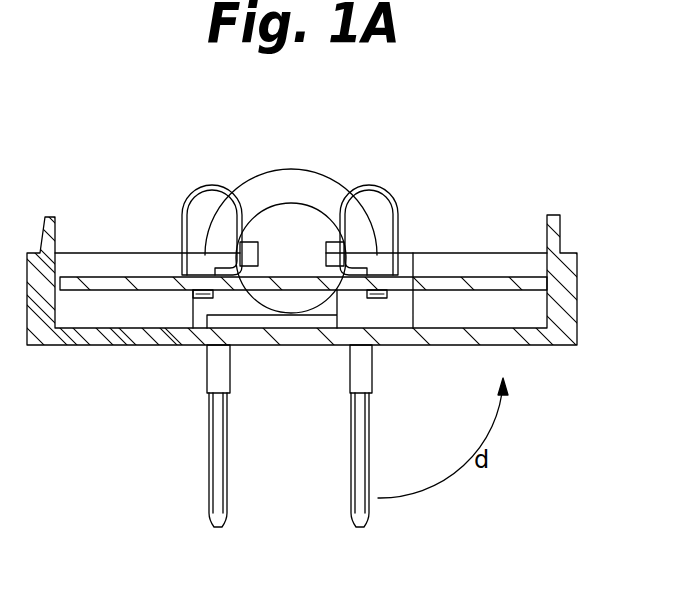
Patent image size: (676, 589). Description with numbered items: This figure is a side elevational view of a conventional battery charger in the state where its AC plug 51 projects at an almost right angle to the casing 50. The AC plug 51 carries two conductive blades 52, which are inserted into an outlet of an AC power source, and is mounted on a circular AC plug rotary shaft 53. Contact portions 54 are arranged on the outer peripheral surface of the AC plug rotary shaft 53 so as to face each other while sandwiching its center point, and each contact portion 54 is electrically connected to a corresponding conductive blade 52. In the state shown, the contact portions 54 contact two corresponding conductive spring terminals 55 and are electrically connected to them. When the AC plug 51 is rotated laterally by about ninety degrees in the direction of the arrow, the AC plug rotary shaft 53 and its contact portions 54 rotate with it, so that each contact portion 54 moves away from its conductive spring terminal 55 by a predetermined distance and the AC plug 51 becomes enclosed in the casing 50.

The casing 50 is at (60, 337).
The AC plug 51 is at (287, 186).
The conductive blades 52 is at (353, 480).
The AC plug rotary shaft 53 is at (303, 242).
The contact portions 54 is at (334, 248).
The conductive spring terminals 55 is at (358, 183).